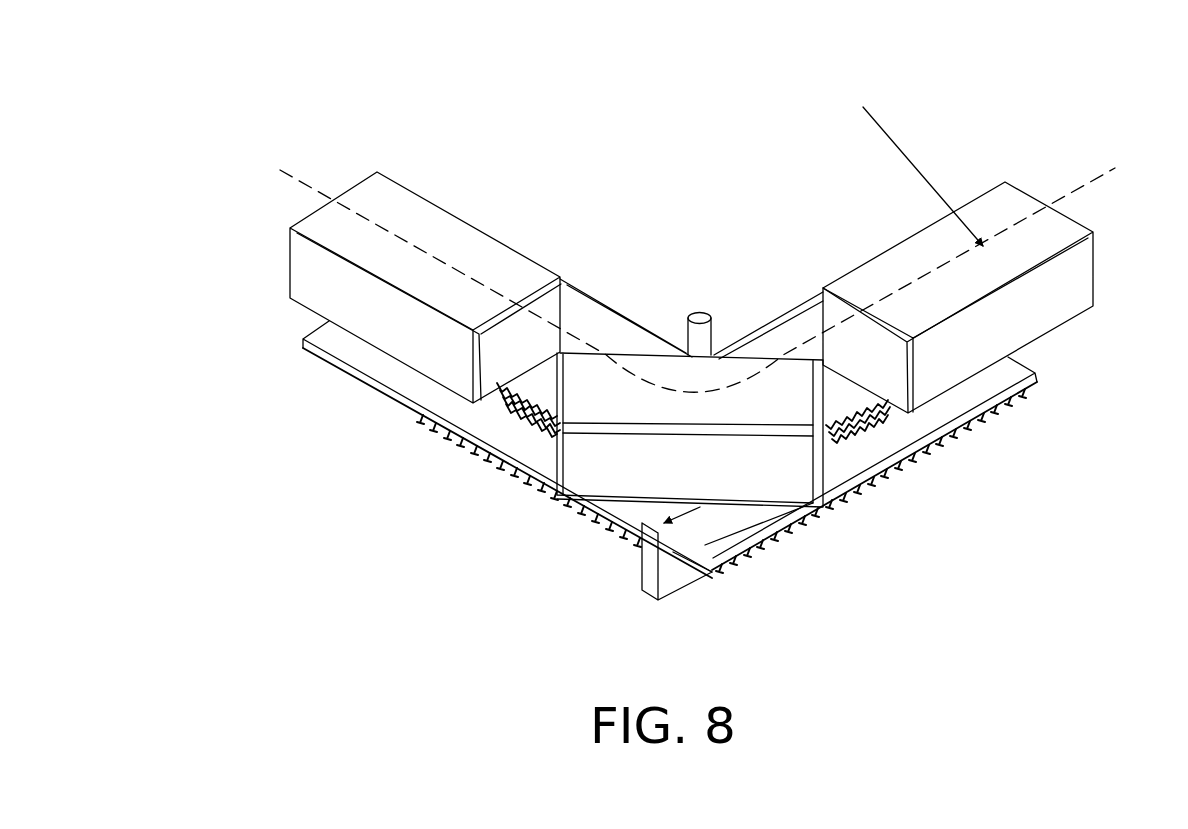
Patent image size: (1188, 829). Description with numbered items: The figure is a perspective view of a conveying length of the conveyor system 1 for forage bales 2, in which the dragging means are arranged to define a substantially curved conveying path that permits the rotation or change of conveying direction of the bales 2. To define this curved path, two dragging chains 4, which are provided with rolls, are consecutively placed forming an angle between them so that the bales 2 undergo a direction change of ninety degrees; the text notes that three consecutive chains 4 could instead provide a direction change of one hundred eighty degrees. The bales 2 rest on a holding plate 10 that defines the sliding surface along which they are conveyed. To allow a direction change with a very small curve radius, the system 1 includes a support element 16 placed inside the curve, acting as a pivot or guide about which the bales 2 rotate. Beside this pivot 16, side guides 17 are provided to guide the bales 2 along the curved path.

The conveyor system 1 is at (407, 137).
The forage bale 2 is at (363, 295).
The dragging chain 4 is at (517, 415).
The holding plate 10 is at (390, 397).
The support element 16 is at (702, 311).
The side guide 17 is at (598, 295).